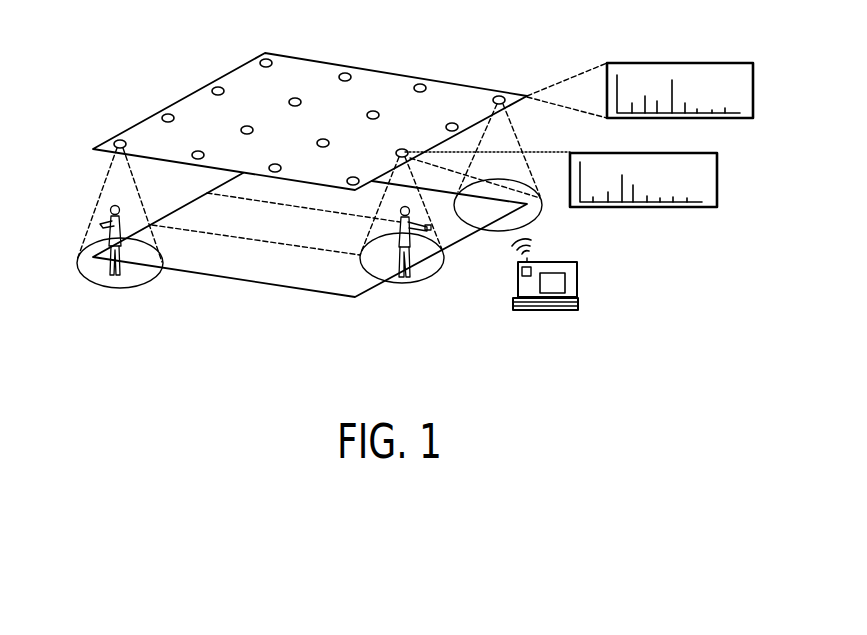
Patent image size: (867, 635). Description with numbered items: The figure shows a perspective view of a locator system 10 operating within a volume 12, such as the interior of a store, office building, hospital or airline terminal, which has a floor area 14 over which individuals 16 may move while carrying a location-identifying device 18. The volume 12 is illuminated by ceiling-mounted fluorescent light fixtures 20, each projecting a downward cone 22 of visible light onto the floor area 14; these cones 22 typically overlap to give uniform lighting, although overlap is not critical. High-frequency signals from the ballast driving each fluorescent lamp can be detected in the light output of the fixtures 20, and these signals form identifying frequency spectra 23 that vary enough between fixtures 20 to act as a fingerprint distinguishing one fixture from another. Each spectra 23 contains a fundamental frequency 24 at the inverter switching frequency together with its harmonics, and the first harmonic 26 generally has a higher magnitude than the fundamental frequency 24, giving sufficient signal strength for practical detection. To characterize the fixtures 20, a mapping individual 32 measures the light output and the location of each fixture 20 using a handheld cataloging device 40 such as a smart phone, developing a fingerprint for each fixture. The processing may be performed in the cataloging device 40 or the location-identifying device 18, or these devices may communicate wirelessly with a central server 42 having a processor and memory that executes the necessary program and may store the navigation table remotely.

The locator system 10 is at (122, 41).
The volume 12 is at (219, 64).
The floor area 14 is at (275, 268).
The individuals 16 is at (145, 265).
The location-identifying device 18 is at (109, 225).
The fluorescent light fixtures 20 is at (295, 102).
The downward cone 22 is at (113, 183).
The identifying frequency spectra 23 is at (753, 88).
The fundamental frequency 24 is at (645, 98).
The first harmonic 26 is at (672, 98).
The mapping individual 32 is at (402, 247).
The handheld cataloging device 40 is at (429, 229).
The central server 42 is at (578, 280).